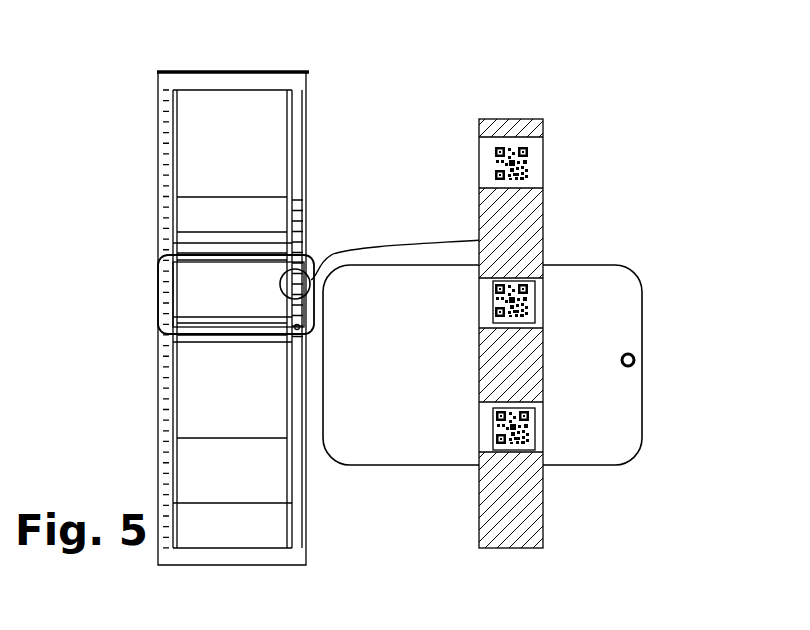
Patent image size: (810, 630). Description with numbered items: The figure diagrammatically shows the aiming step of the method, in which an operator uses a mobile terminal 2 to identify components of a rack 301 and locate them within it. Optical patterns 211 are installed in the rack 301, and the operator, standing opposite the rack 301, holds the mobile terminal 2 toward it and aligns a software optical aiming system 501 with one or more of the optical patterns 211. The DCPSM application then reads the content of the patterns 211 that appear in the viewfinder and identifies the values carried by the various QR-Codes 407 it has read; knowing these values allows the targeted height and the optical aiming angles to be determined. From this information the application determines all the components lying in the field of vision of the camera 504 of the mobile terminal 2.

The rack 301 is at (238, 72).
The mobile terminal 2 is at (158, 298).
The optical pattern 211 is at (533, 148).
The QR-Code 407 is at (527, 169).
The software optical aiming system 501 is at (540, 355).
The camera 504 is at (630, 367).